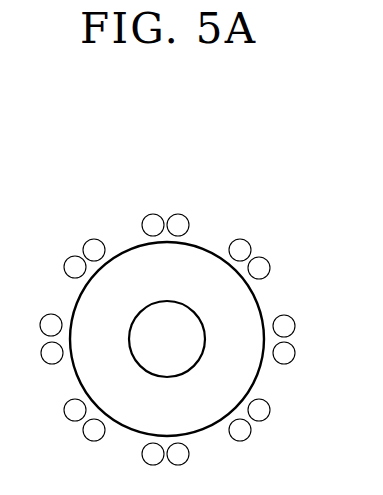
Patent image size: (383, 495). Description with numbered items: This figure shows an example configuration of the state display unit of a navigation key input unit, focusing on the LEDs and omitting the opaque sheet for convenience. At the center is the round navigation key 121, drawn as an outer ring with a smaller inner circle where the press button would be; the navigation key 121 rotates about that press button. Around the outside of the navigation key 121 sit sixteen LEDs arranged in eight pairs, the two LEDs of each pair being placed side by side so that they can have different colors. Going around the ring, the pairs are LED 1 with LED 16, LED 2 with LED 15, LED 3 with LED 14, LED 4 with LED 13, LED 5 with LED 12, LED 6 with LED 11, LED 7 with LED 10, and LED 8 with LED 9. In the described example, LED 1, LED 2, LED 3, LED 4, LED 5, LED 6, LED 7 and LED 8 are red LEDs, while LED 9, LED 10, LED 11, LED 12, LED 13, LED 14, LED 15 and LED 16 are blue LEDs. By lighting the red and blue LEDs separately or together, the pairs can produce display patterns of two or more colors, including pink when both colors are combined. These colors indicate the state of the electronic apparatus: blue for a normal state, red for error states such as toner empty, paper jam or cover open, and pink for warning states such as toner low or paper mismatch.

The navigation key 121 is at (252, 372).
The LED # 1 is at (153, 225).
The LED # 2 is at (240, 250).
The LED # 3 is at (284, 326).
The LED # 4 is at (259, 410).
The LED # 5 is at (178, 454).
The LED # 6 is at (94, 430).
The LED # 7 is at (52, 353).
The LED # 8 is at (75, 267).
The LED # 9 is at (94, 250).
The LED # 10 is at (51, 325).
The LED # 11 is at (75, 410).
The LED # 12 is at (153, 454).
The LED # 13 is at (240, 430).
The LED # 14 is at (284, 353).
The LED # 15 is at (259, 268).
The LED # 16 is at (178, 225).